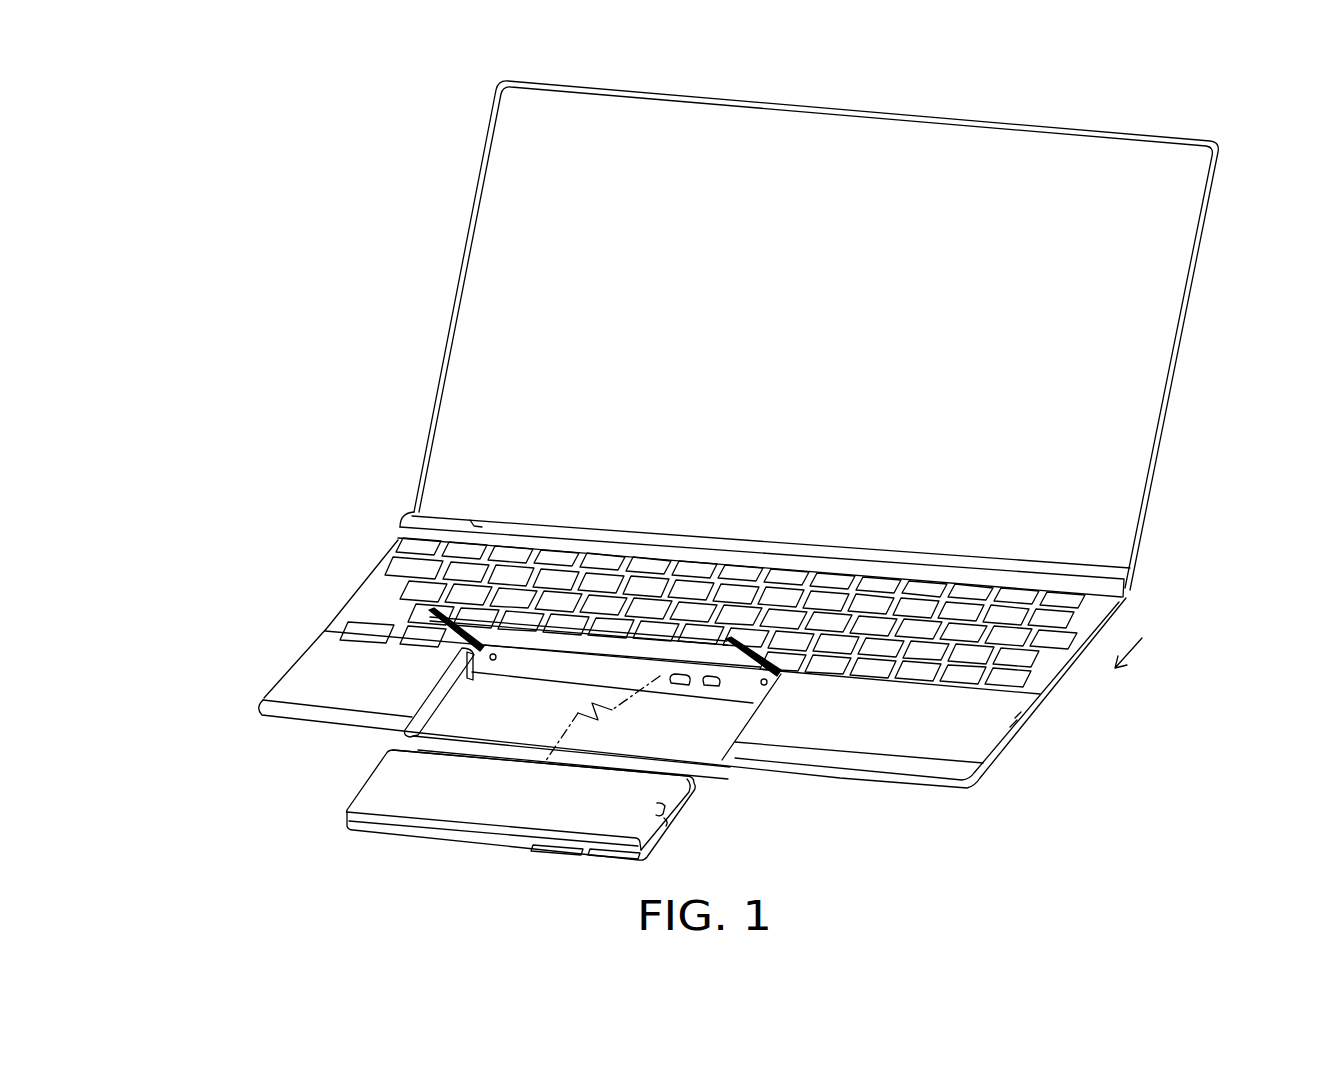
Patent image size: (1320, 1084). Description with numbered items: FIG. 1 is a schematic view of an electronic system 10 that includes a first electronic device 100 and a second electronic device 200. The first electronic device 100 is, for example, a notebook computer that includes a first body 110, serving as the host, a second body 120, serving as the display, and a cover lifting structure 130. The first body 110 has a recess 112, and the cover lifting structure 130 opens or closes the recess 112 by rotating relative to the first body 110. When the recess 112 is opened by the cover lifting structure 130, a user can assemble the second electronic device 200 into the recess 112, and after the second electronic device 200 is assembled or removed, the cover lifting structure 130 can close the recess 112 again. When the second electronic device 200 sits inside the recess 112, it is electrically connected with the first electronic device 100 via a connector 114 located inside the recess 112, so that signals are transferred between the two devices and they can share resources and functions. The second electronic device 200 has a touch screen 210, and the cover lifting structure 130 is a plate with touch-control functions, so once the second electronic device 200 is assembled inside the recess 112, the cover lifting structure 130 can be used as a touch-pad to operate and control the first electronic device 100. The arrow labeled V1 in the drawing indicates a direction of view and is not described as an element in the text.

The electronic system 10 is at (206, 190).
The first electronic device 100 is at (231, 408).
The first body 110 is at (355, 600).
The recess 112 is at (728, 721).
The connector 114 is at (676, 688).
The second body 120 is at (437, 448).
The cover lifting structure 130 is at (437, 643).
The second electronic device 200 is at (368, 830).
The touch screen 210 is at (376, 772).
The viewing direction V1 is at (1140, 657).